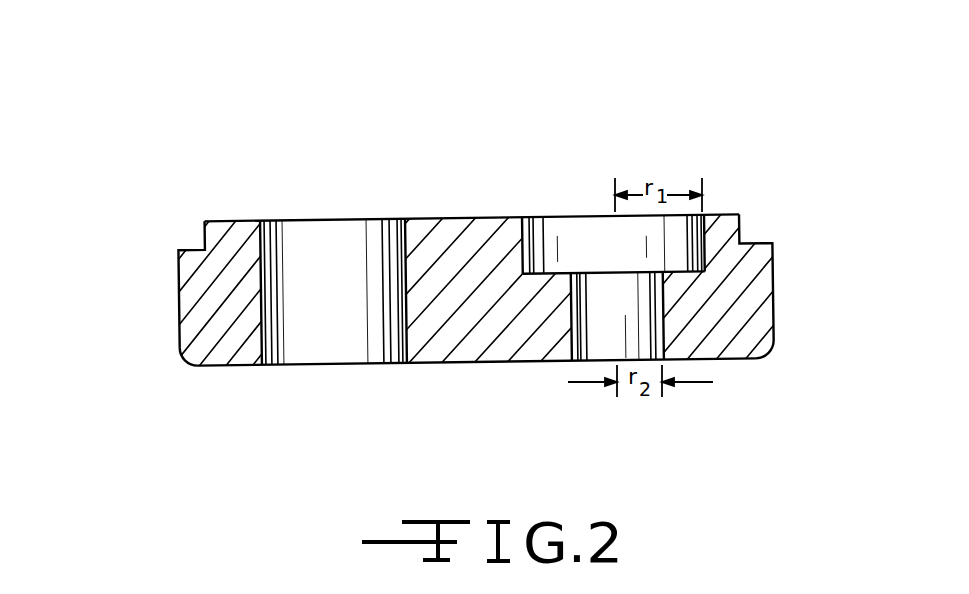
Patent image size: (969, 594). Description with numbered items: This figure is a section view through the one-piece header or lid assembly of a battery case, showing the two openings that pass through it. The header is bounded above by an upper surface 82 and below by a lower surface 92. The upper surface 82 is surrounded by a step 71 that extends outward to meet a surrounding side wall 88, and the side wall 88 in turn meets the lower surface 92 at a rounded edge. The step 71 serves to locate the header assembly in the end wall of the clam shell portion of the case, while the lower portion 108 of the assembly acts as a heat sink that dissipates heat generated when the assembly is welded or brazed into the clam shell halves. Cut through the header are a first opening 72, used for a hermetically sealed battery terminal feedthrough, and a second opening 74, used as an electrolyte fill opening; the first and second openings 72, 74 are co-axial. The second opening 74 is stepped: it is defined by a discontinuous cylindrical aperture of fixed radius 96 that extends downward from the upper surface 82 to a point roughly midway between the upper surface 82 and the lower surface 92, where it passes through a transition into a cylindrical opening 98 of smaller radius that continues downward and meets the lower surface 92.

The step 71 is at (755, 243).
The first opening 72 is at (314, 238).
The second opening 74 is at (576, 240).
The upper surface 82 is at (465, 218).
The side wall 88 is at (179, 312).
The lower surface 92 is at (489, 364).
The cylindrical aperture of fixed radius r1 96 is at (700, 248).
The cylindrical opening of radius r2 98 is at (635, 332).
The lower portion 108 is at (196, 367).